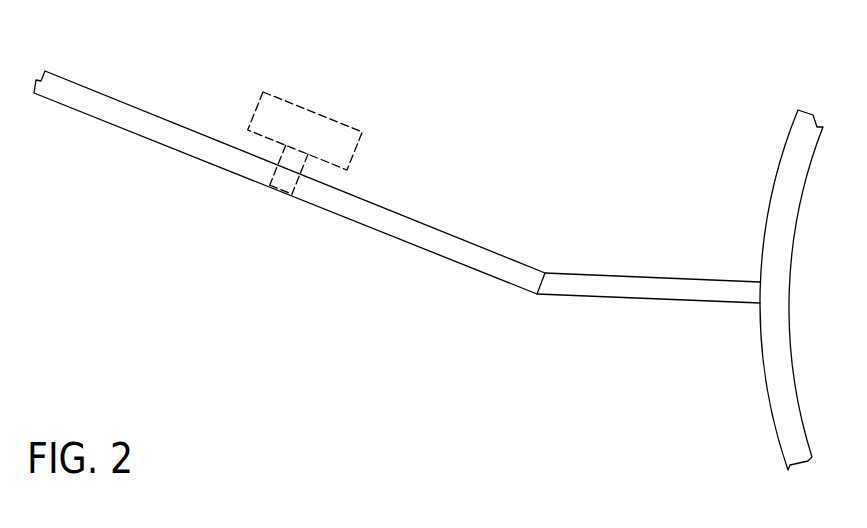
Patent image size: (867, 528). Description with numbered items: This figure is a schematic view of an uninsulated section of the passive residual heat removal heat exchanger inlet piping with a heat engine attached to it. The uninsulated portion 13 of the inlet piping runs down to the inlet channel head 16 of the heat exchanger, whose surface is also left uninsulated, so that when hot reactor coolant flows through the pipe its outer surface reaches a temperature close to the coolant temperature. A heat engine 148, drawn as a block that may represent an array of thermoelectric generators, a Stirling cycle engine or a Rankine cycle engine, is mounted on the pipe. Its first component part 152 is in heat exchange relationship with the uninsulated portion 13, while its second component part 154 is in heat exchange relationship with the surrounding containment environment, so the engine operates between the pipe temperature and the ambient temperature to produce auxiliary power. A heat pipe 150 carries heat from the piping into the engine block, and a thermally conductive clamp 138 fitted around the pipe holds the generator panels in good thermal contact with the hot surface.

The uninsulated portion of the PRHR inlet piping 13 is at (75, 80).
The inlet channel head 16 is at (768, 215).
The clamp 138 is at (282, 172).
The heat engine 148 is at (317, 135).
The heat pipe 150 is at (302, 170).
The first component part 152 is at (279, 163).
The second component part 154 is at (318, 112).